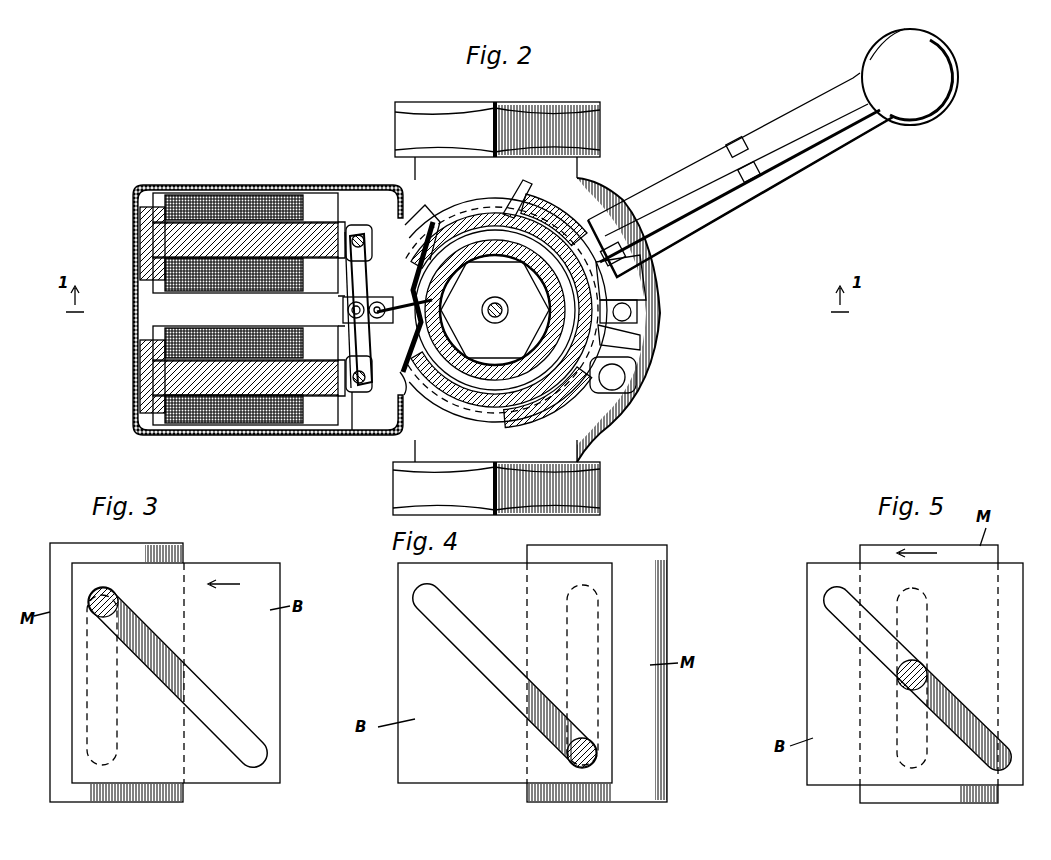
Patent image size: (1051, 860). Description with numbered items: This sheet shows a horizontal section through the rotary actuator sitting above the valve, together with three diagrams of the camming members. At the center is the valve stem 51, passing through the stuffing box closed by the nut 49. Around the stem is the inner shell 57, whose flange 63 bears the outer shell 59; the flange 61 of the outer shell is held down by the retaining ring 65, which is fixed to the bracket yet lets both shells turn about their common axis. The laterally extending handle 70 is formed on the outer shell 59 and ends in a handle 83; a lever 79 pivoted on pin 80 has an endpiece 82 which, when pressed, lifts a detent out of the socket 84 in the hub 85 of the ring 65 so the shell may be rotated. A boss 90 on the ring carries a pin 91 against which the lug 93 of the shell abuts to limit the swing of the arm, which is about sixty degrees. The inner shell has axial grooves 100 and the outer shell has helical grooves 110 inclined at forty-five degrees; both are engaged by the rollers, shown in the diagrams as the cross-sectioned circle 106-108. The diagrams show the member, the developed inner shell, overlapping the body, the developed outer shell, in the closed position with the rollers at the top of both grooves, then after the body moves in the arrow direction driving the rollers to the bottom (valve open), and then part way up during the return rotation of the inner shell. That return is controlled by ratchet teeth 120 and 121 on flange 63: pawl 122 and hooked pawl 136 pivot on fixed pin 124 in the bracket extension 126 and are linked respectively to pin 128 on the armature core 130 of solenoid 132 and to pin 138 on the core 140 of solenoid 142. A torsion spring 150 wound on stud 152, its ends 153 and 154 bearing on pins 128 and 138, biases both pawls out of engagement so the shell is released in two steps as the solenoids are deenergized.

In FIG. 2, the nut 49 is at (482, 311).
In FIG. 2, the valve stem 51 is at (502, 304).
In FIG. 2, the shell 57 is at (530, 400).
In FIG. 3, the shell 57 is at (153, 545).
In FIG. 4, the shell 57 is at (668, 551).
In FIG. 5, the shell 57 is at (998, 548).
In FIG. 2, the shell 59 is at (550, 235).
In FIG. 3, the shell 59 is at (218, 564).
In FIG. 4, the shell 59 is at (398, 687).
In FIG. 5, the shell 59 is at (807, 579).
In FIG. 2, the flange 61 is at (475, 210).
In FIG. 2, the flange 63 is at (452, 228).
In FIG. 2, the retaining ring 65 is at (598, 410).
In FIG. 2, the handle 70 is at (806, 168).
In FIG. 2, the lever 79 is at (680, 200).
In FIG. 2, the pin 80 is at (743, 148).
In FIG. 2, the endpiece 82 is at (930, 68).
In FIG. 2, the handle 83 is at (944, 106).
In FIG. 2, the socket 84 is at (620, 382).
In FIG. 2, the hub 85 is at (642, 380).
In FIG. 2, the boss 90 is at (648, 290).
In FIG. 2, the pin 91 is at (530, 182).
In FIG. 2, the lug 93 is at (641, 343).
In FIG. 2, the grooves 100 is at (480, 296).
In FIG. 3, the grooves 100 is at (117, 710).
In FIG. 4, the grooves 100 is at (567, 621).
In FIG. 5, the grooves 100 is at (928, 612).
In FIG. 3, the rollers 106-108 is at (112, 598).
In FIG. 4, the rollers 106-108 is at (600, 751).
In FIG. 5, the rollers 106-108 is at (925, 668).
In FIG. 3, the grooves 110 is at (172, 652).
In FIG. 4, the grooves 110 is at (463, 656).
In FIG. 5, the grooves 110 is at (940, 692).
In FIG. 2, the ratchet tooth 120 is at (390, 382).
In FIG. 2, the ratchet tooth 121 is at (360, 326).
In FIG. 2, the pawl 122 is at (366, 373).
In FIG. 2, the pin 124 is at (369, 300).
In FIG. 2, the bracket extension 126 is at (356, 296).
In FIG. 2, the pin 128 is at (376, 302).
In FIG. 2, the armature core 130 is at (350, 230).
In FIG. 2, the solenoid 132 is at (232, 195).
In FIG. 2, the hooked pawl 136 is at (430, 232).
In FIG. 2, the pin 138 is at (396, 372).
In FIG. 2, the core 140 is at (346, 388).
In FIG. 2, the solenoid 142 is at (242, 425).
In FIG. 2, the torsion spring 150 is at (348, 308).
In FIG. 2, the stud 152 is at (348, 312).
In FIG. 2, the spring end 153 is at (358, 235).
In FIG. 2, the spring end 154 is at (354, 394).